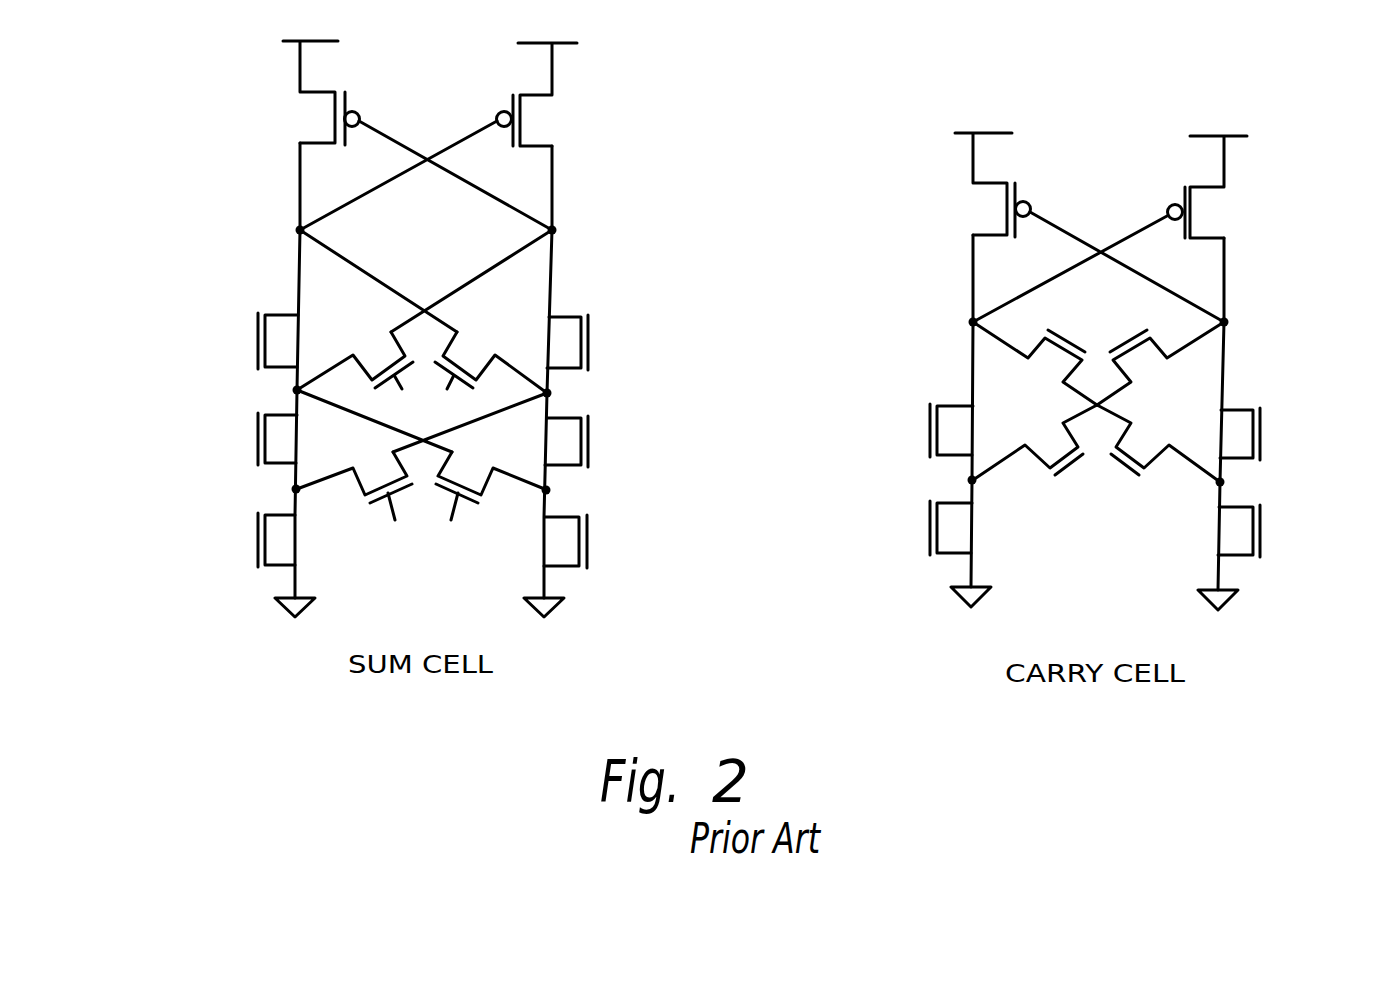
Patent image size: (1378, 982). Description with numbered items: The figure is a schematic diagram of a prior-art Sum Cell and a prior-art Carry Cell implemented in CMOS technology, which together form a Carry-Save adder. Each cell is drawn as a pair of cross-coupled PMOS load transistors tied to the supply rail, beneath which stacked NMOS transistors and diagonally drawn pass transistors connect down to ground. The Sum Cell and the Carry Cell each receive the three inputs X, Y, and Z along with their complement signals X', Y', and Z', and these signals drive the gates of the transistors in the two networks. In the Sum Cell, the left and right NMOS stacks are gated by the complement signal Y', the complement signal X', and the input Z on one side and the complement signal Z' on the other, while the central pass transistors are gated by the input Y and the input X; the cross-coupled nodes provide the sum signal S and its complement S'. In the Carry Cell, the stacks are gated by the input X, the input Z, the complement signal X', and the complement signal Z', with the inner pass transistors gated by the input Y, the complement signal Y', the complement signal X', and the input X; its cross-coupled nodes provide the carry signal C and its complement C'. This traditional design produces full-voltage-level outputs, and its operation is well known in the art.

The complement sum signal S' is at (262, 141).
The sum signal S is at (586, 144).
The complement carry signal C' is at (933, 235).
The carry signal C is at (1258, 236).
The complement signal Y' is at (704, 350).
The input Y is at (697, 361).
The complement signal X' is at (759, 455).
The input X is at (758, 483).
The complement signal Z' is at (939, 536).
The input Z is at (581, 534).